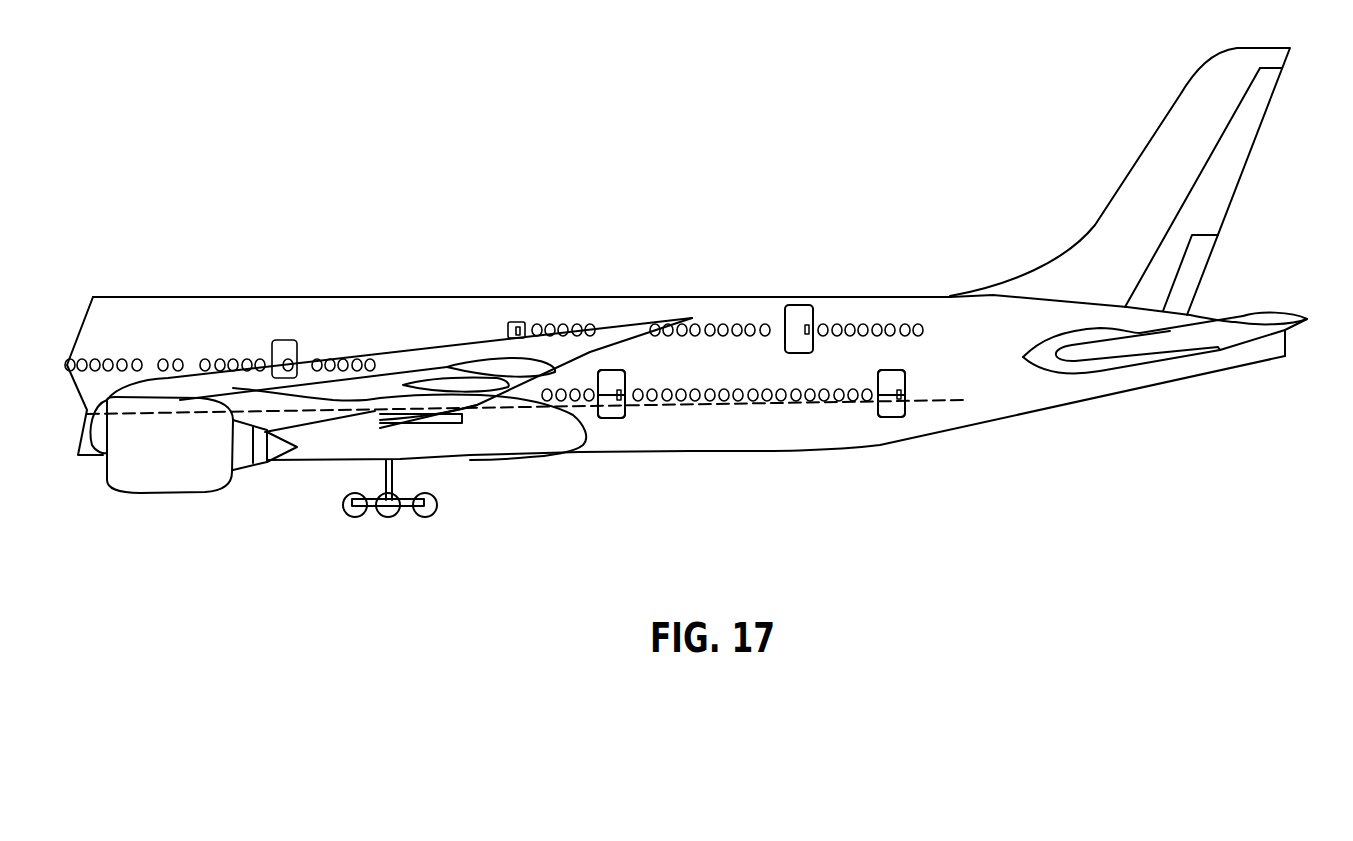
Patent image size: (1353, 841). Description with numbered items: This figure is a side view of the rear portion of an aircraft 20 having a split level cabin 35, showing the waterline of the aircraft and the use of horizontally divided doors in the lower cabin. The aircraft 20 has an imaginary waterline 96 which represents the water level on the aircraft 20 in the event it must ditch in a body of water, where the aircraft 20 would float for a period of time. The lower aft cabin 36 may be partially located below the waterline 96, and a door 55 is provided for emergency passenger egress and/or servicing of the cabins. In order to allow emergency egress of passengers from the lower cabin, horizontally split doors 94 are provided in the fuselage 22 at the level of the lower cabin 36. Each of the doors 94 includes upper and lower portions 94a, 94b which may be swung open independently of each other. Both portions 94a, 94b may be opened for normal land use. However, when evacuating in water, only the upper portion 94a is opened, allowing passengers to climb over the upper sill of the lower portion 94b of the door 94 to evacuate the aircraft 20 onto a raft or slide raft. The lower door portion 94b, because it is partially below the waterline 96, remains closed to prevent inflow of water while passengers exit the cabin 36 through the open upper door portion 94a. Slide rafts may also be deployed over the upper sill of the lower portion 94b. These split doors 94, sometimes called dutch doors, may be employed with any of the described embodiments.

The aircraft 20 is at (302, 228).
The fuselage 22 is at (165, 297).
The split level cabin 35 is at (478, 280).
The lower aft cabin 36 is at (1005, 396).
The door 55 is at (795, 321).
The horizontally split door 94 is at (855, 410).
The upper door portion 94a is at (612, 378).
The lower door portion 94b is at (605, 418).
The waterline 96 is at (937, 405).